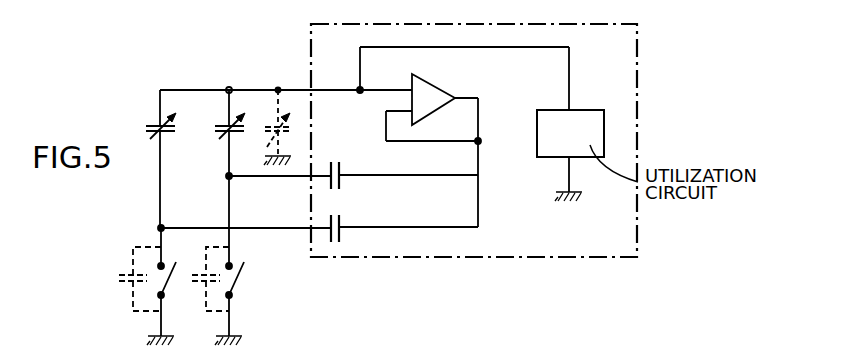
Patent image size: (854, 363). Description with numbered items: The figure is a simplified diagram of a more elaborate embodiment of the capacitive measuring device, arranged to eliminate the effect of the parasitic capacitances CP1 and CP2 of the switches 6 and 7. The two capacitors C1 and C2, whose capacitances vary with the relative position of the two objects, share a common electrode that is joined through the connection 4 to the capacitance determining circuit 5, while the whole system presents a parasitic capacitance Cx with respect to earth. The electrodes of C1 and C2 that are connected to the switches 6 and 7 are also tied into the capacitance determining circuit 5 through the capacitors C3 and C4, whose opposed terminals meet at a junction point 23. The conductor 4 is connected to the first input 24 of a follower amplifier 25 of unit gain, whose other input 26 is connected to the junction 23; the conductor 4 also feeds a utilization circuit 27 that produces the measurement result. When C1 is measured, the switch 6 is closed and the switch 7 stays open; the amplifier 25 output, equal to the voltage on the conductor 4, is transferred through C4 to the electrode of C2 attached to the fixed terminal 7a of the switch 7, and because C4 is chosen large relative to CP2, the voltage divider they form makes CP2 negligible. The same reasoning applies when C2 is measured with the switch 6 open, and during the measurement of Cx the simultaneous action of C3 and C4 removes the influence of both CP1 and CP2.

The connection 4 is at (263, 89).
The capacitance determining circuit 5 is at (641, 149).
The switch 6 is at (188, 260).
The switch 7 is at (241, 279).
The fixed terminal of the switch 7a is at (232, 265).
The junction point 23 is at (481, 144).
The first input of the follower amplifier 24 is at (410, 88).
The follower amplifier 25 is at (427, 82).
The other input of the follower amplifier 26 is at (410, 113).
The utilization circuit 27 is at (587, 125).
The capacitor C1 is at (153, 124).
The capacitor C2 is at (223, 127).
The parasitic capacitance Cx is at (264, 127).
The capacitor C3 is at (340, 230).
The capacitor C4 is at (340, 174).
The parasitic capacitance of the switch CP1 is at (131, 285).
The parasitic capacitance of the switch CP2 is at (207, 288).